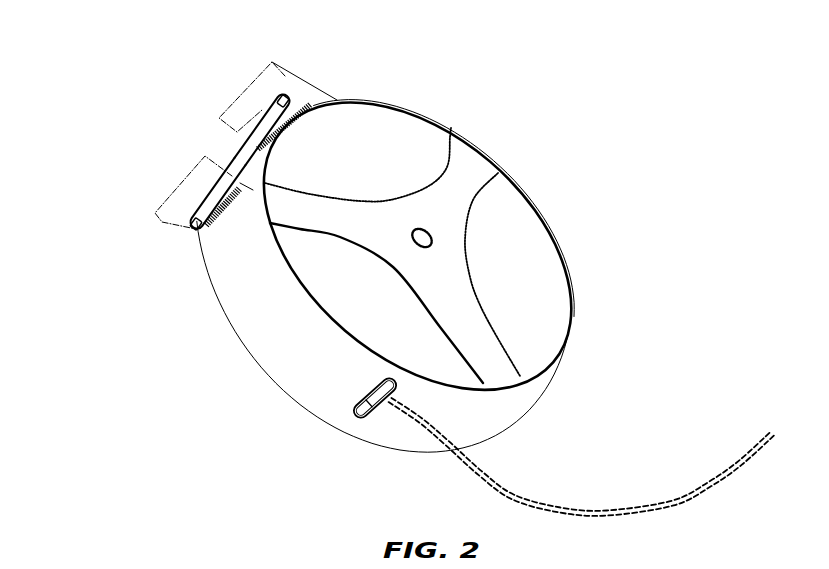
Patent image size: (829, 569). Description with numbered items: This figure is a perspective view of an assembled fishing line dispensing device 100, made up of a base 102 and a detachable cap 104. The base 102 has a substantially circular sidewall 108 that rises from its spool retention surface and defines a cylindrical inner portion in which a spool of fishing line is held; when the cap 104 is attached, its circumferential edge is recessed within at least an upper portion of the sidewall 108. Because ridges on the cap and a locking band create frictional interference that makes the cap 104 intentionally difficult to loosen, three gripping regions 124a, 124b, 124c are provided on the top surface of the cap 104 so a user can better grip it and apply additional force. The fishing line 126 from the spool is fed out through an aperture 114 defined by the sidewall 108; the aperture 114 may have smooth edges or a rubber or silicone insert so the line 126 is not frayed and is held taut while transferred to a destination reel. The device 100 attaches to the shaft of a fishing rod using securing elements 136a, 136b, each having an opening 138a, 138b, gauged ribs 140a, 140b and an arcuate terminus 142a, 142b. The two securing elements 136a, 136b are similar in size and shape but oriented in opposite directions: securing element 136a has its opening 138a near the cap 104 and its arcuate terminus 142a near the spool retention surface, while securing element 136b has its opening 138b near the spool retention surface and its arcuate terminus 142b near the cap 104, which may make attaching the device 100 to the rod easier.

The fishing line dispensing device 100 is at (78, 65).
The base 102 is at (198, 394).
The detachable cap 104 is at (522, 253).
The sidewall 108 is at (500, 410).
The aperture 114 is at (362, 415).
The gripping region 124a is at (476, 201).
The gripping region 124b is at (345, 201).
The gripping region 124c is at (451, 331).
The fishing line 126 is at (668, 498).
The securing element 136a is at (173, 215).
The securing element 136b is at (270, 80).
The opening 138a is at (249, 142).
The opening 138b is at (233, 171).
The gauged ribs 140a is at (203, 202).
The gauged ribs 140b is at (255, 115).
The arcuate terminus 142a is at (197, 230).
The arcuate terminus 142b is at (284, 100).